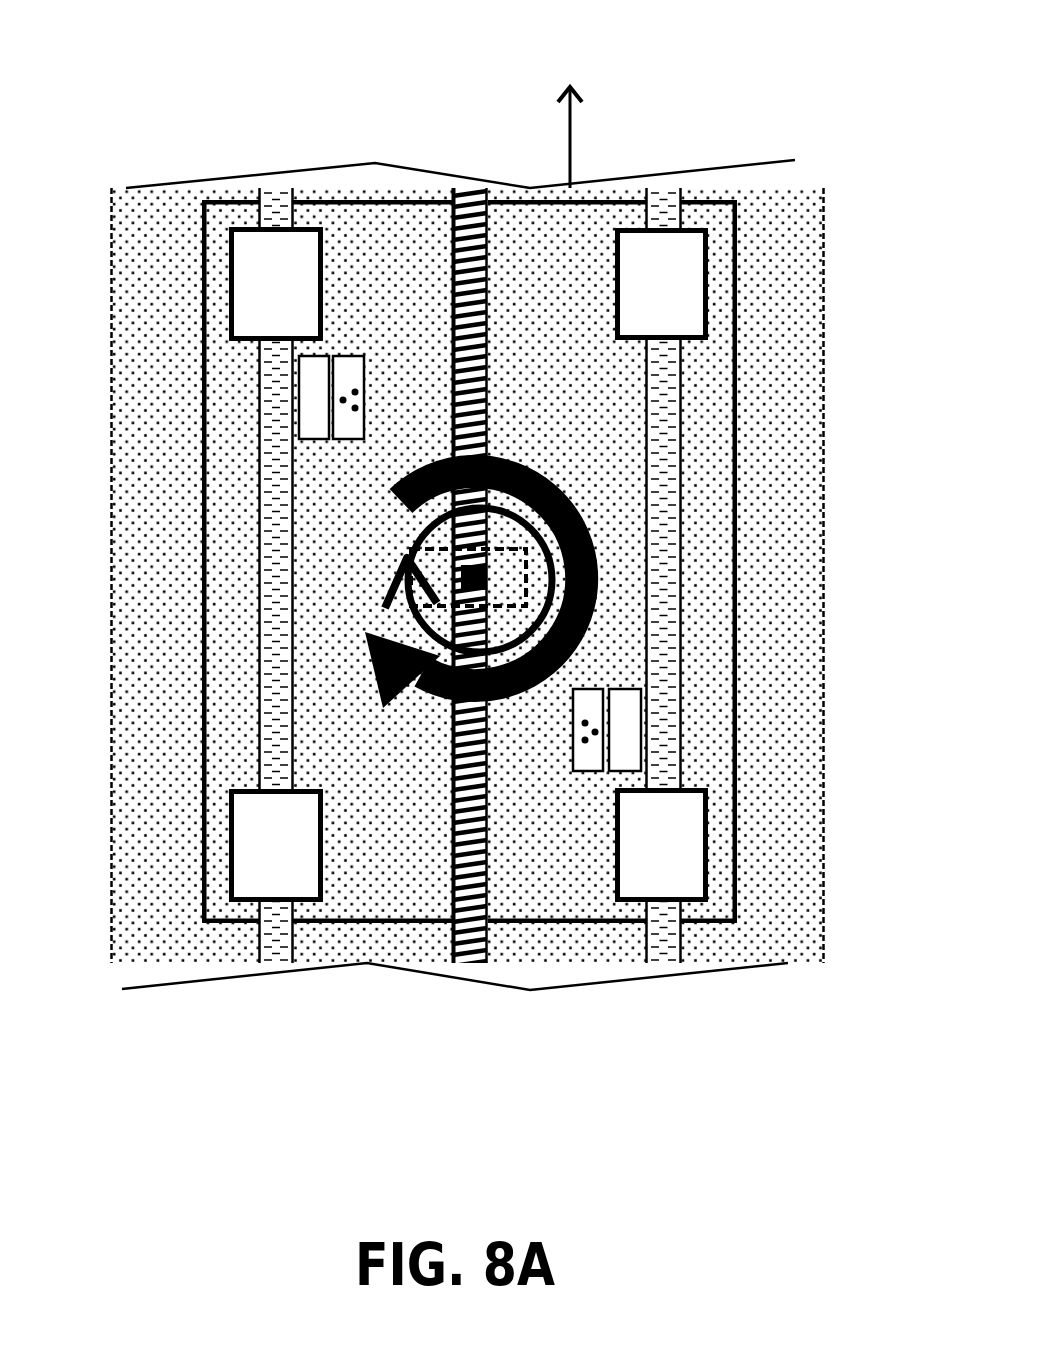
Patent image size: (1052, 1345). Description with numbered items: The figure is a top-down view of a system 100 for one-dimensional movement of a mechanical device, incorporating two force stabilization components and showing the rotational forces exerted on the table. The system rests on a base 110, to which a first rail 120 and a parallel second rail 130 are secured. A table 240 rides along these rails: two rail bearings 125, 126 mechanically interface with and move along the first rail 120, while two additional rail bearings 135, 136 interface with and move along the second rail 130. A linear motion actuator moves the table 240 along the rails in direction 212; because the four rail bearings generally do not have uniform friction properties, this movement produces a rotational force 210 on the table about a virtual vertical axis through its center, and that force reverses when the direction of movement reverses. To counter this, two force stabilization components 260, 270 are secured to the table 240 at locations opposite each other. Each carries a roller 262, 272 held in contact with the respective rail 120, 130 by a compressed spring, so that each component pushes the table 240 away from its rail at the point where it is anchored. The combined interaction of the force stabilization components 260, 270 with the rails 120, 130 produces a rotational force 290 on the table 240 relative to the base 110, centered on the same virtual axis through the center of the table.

The system for 1-dimensional movement 100 is at (98, 66).
The base 110 is at (813, 265).
The first rail 120 is at (277, 937).
The rail bearing 125 is at (276, 846).
The rail bearing 126 is at (276, 284).
The second rail 130 is at (672, 944).
The rail bearing 135 is at (662, 845).
The rail bearing 136 is at (662, 284).
The rotational force 210 is at (553, 597).
The direction 212 is at (572, 160).
The table 240 is at (195, 242).
The force stabilization component 260 is at (312, 422).
The roller 262 is at (297, 401).
The force stabilization component 270 is at (627, 757).
The roller 272 is at (642, 731).
The rotational force 290 is at (558, 479).